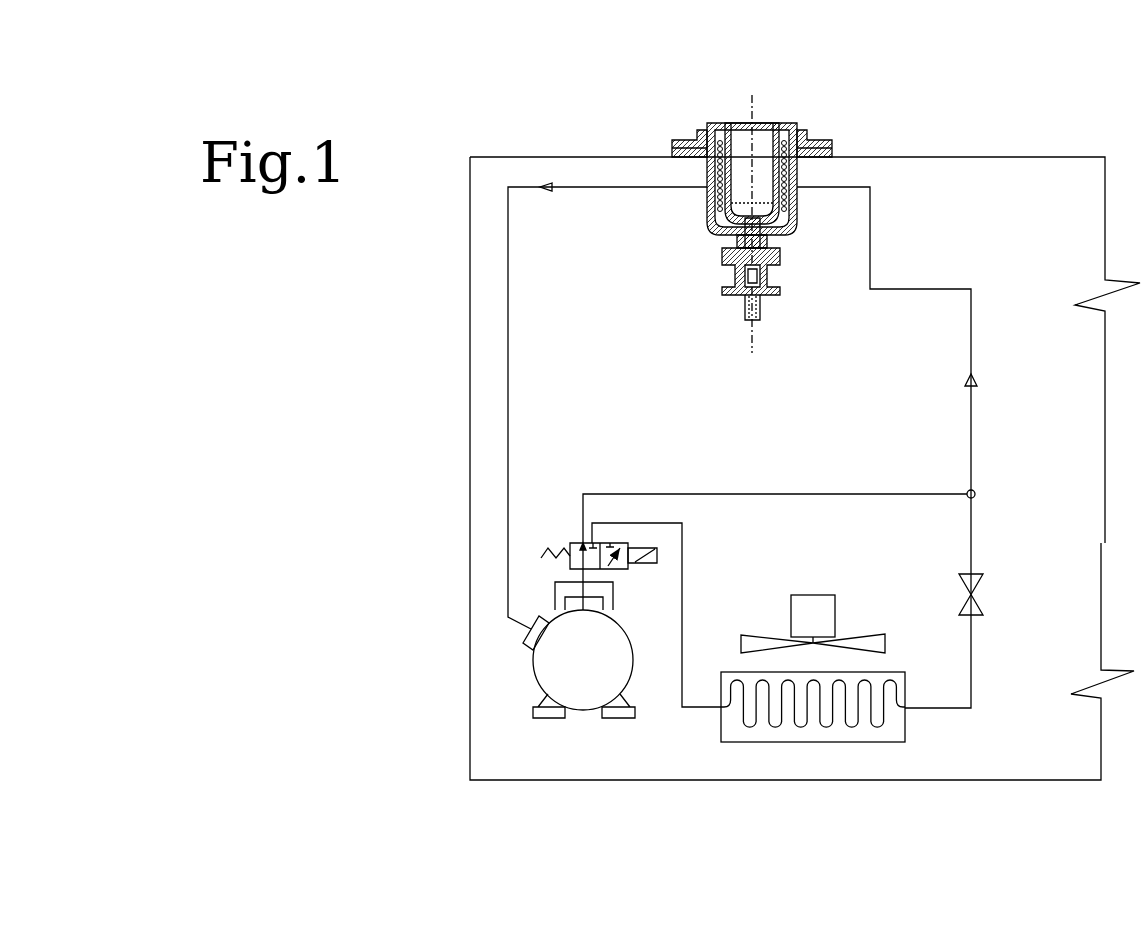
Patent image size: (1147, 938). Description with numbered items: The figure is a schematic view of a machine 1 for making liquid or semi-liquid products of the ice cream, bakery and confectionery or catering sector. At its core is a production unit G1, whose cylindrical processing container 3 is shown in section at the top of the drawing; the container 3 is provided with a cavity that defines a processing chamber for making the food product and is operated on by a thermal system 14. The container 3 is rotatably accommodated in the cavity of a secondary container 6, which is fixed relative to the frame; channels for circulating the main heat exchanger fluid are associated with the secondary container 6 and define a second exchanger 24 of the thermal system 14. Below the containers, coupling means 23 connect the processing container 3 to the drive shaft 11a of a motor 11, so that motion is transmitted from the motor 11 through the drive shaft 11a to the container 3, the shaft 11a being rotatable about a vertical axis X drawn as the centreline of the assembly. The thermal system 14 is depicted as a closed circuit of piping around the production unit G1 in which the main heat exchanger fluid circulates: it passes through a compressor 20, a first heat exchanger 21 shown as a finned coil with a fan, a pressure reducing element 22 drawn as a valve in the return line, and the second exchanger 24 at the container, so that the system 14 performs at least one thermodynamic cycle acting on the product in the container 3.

The machine 1 is at (588, 128).
The cylindrical processing container 3 is at (729, 218).
The production unit G1 is at (833, 108).
The vertical axis X is at (752, 113).
The thermal system 14 is at (920, 245).
The second exchanger 24 is at (697, 210).
The secondary container 6 is at (693, 235).
The coupling means 23 is at (715, 277).
The motor 11 is at (772, 338).
The drive shaft 11a is at (745, 307).
The compressor 20 is at (580, 658).
The first heat exchanger 21 is at (867, 755).
The pressure reducing element 22 is at (975, 592).